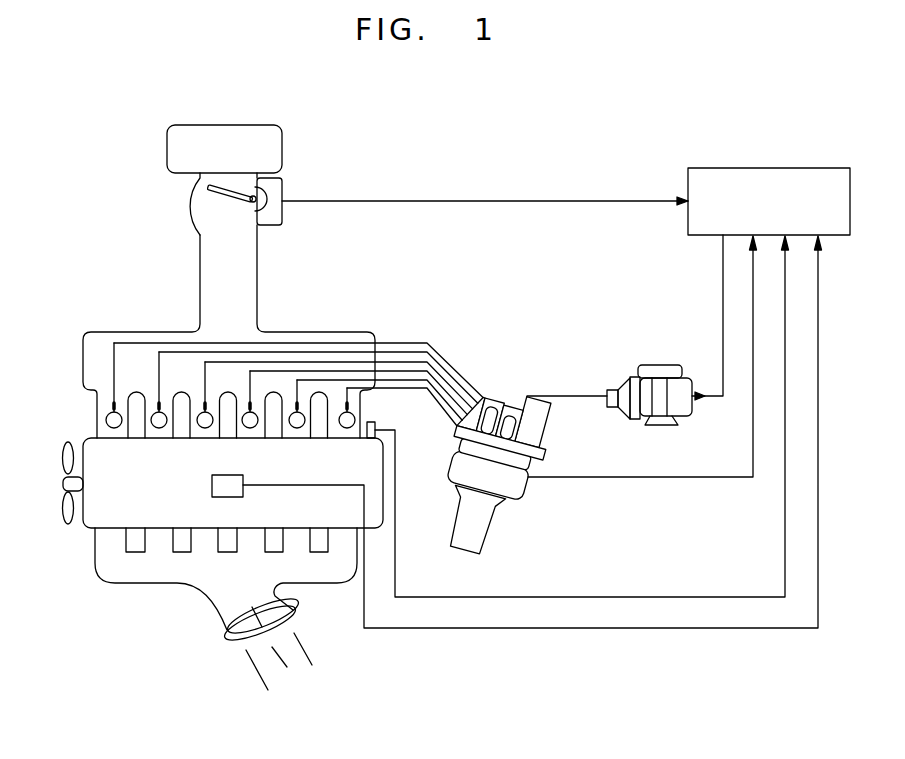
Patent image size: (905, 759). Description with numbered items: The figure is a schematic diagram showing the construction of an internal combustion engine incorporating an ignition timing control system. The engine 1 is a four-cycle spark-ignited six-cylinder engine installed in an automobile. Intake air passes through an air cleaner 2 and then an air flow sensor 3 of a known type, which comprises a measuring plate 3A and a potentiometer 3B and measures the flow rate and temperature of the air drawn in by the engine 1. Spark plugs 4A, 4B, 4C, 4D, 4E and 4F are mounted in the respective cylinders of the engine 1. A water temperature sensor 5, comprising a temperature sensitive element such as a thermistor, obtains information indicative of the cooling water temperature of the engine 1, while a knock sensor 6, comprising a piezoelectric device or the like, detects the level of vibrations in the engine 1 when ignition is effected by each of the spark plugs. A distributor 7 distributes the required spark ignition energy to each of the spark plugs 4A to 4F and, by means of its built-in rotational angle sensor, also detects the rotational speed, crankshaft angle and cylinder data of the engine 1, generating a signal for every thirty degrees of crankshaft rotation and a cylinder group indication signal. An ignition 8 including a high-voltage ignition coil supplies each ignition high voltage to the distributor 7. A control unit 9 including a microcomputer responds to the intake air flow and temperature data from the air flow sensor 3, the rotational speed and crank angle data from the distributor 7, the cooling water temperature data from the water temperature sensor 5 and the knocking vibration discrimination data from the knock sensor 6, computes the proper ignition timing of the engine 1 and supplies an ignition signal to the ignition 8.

The engine 1 is at (88, 532).
The air cleaner 2 is at (167, 148).
The air flow sensor 3 is at (190, 205).
The measuring plate 3A is at (216, 199).
The potentiometer 3B is at (283, 192).
The spark plug 4A is at (113, 428).
The spark plug 4B is at (158, 428).
The spark plug 4C is at (204, 428).
The spark plug 4D is at (251, 428).
The spark plug 4E is at (298, 428).
The spark plug 4F is at (348, 428).
The water temperature sensor 5 is at (374, 421).
The knock sensor 6 is at (231, 497).
The distributor 7 is at (503, 498).
The ignition 8 is at (660, 424).
The control unit 9 is at (688, 228).